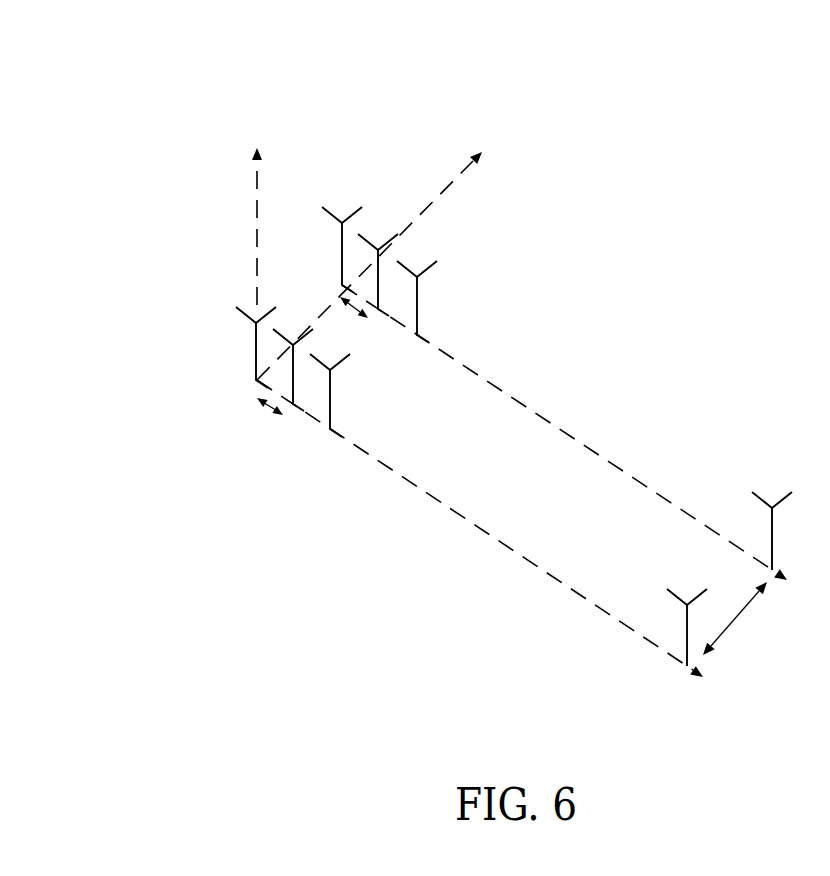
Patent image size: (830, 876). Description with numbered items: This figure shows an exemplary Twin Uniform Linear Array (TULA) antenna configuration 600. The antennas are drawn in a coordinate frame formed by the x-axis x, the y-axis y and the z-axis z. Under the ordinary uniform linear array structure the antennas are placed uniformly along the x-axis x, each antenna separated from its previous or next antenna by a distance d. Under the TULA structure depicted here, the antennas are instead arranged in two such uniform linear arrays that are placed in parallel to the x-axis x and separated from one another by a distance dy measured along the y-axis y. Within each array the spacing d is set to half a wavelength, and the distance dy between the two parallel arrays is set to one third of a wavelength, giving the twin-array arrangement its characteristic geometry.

The Twin Uniform Linear Array (TULA) antenna configuration 600 is at (80, 115).
The x-axis x is at (488, 540).
The y-axis y is at (375, 252).
The z-axis z is at (255, 211).
The antenna spacing d is at (311, 372).
The inter-array distance dy is at (735, 618).